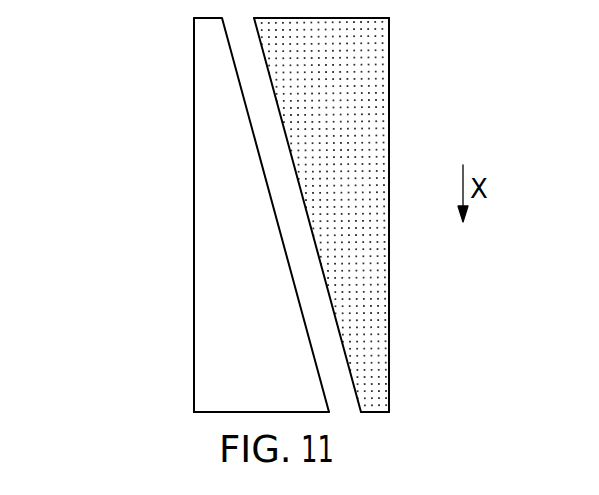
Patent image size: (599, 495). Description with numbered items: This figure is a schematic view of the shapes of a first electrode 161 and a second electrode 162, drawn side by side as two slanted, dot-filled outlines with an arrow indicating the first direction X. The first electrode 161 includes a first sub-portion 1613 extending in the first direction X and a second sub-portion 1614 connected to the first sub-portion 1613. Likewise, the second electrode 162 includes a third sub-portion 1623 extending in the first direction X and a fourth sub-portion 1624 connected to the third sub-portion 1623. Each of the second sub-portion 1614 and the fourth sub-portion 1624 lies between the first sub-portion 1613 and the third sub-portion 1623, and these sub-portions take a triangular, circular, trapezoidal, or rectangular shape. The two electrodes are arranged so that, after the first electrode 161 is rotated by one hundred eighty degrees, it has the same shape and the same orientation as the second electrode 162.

The first electrode 161 is at (182, 215).
The first sub-portion 1613 is at (200, 137).
The second sub-portion 1614 is at (293, 373).
The second electrode 162 is at (386, 215).
The fourth sub-portion 1624 is at (312, 65).
The third sub-portion 1623 is at (373, 340).